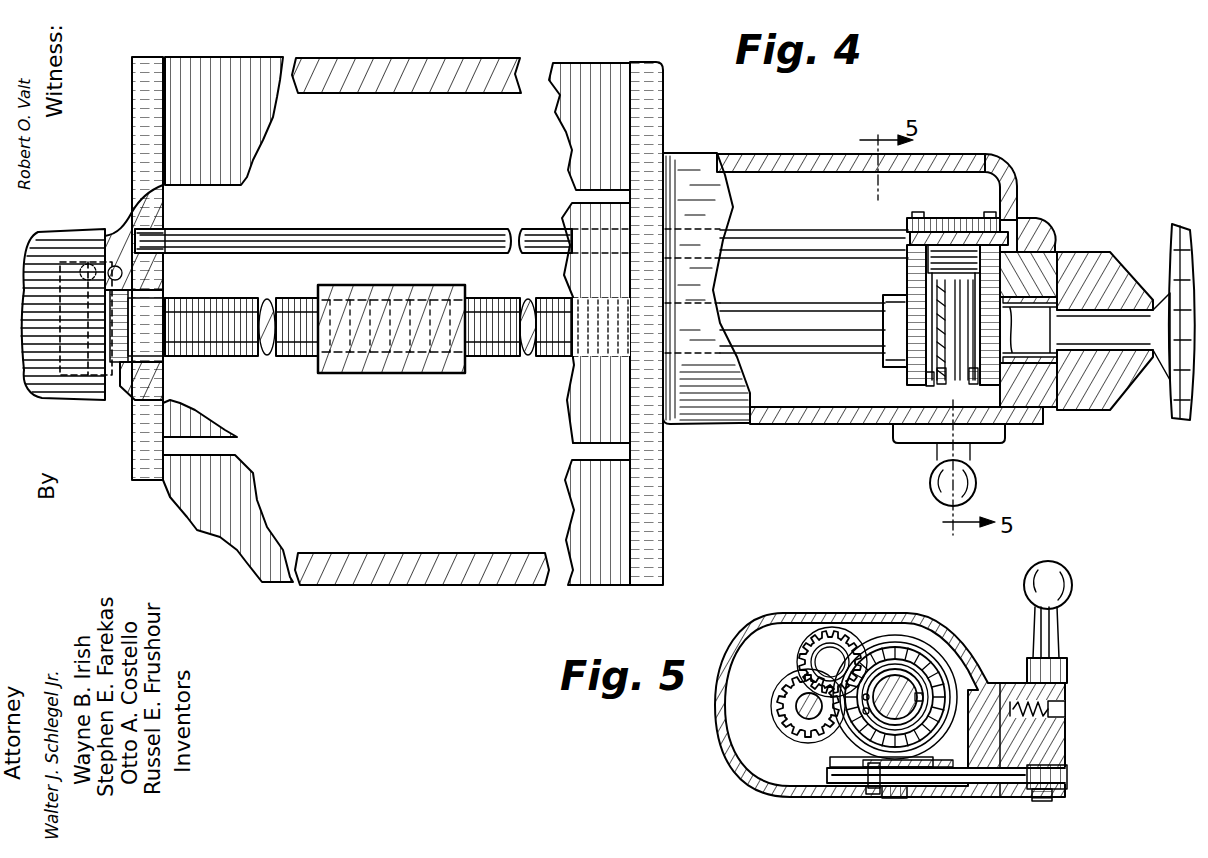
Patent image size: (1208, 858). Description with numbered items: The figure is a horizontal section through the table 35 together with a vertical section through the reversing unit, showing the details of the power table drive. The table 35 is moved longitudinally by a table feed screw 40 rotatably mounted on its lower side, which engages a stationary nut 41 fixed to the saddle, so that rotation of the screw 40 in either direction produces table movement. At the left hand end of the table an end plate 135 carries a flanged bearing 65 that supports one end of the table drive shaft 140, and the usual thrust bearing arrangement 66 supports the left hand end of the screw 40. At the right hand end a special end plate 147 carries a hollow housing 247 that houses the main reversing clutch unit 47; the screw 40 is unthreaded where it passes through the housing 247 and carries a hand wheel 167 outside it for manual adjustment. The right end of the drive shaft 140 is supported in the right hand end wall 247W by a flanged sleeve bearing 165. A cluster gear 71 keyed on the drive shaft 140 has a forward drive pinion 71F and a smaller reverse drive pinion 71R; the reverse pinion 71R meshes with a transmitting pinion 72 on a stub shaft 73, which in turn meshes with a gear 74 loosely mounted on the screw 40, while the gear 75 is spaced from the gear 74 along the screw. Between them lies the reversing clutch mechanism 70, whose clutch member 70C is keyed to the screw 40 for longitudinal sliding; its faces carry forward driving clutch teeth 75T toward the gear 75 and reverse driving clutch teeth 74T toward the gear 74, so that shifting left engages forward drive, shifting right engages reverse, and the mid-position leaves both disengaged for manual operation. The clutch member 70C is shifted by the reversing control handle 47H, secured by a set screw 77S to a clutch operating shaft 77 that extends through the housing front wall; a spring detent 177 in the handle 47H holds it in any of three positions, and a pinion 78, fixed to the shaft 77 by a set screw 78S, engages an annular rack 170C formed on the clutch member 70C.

In FIG. 4, the table 35 is at (400, 587).
In FIG. 4, the table feed screw 40 is at (540, 358).
In FIG. 5, the table feed screw 40 is at (905, 697).
In FIG. 4, the stationary nut 41 is at (446, 374).
In FIG. 4, the main reversing clutch unit 47 is at (741, 410).
In FIG. 5, the main reversing clutch unit 47 is at (1068, 640).
In FIG. 4, the reversing control handle 47H is at (938, 496).
In FIG. 5, the reversing control handle 47H is at (1071, 572).
In FIG. 4, the flanged bearing 65 is at (166, 216).
In FIG. 4, the thrust bearing arrangement 66 is at (88, 262).
In FIG. 4, the reversing clutch mechanism 70 is at (985, 395).
In FIG. 5, the reversing clutch mechanism 70 is at (943, 678).
In FIG. 4, the clutch member 70C is at (941, 388).
In FIG. 5, the clutch member 70C is at (928, 678).
In FIG. 4, the annular rack 170C is at (973, 388).
In FIG. 4, the cluster gear 71 is at (946, 218).
In FIG. 4, the forward drive pinion 71F is at (918, 212).
In FIG. 5, the forward drive pinion 71F is at (801, 724).
In FIG. 4, the reverse drive pinion 71R is at (990, 212).
In FIG. 5, the reverse drive pinion 71R is at (781, 696).
In FIG. 5, the transmitting pinion 72 is at (812, 658).
In FIG. 5, the stub shaft 73 is at (828, 656).
In FIG. 4, the gear 74 is at (1035, 406).
In FIG. 5, the gear 74 is at (873, 656).
In FIG. 4, the reverse driving clutch teeth 74T is at (1004, 288).
In FIG. 4, the gear 75 is at (915, 293).
In FIG. 5, the gear 75 is at (852, 724).
In FIG. 4, the forward driving clutch teeth 75T is at (930, 386).
In FIG. 5, the clutch operating shaft 77 is at (1062, 776).
In FIG. 5, the set screw 77S is at (1052, 801).
In FIG. 5, the pinion 78 is at (900, 797).
In FIG. 5, the set screw 78S is at (868, 792).
In FIG. 4, the end plate 135 is at (148, 122).
In FIG. 4, the table drive shaft 140 is at (345, 228).
In FIG. 5, the table drive shaft 140 is at (800, 712).
In FIG. 4, the end plate 147 is at (648, 530).
In FIG. 4, the flanged sleeve bearing 165 is at (1025, 228).
In FIG. 4, the hand wheel 167 is at (1164, 250).
In FIG. 5, the spring detent 177 is at (1043, 722).
In FIG. 4, the hollow housing 247 is at (808, 428).
In FIG. 5, the hollow housing 247 is at (834, 612).
In FIG. 4, the right hand end wall 247W is at (1048, 163).